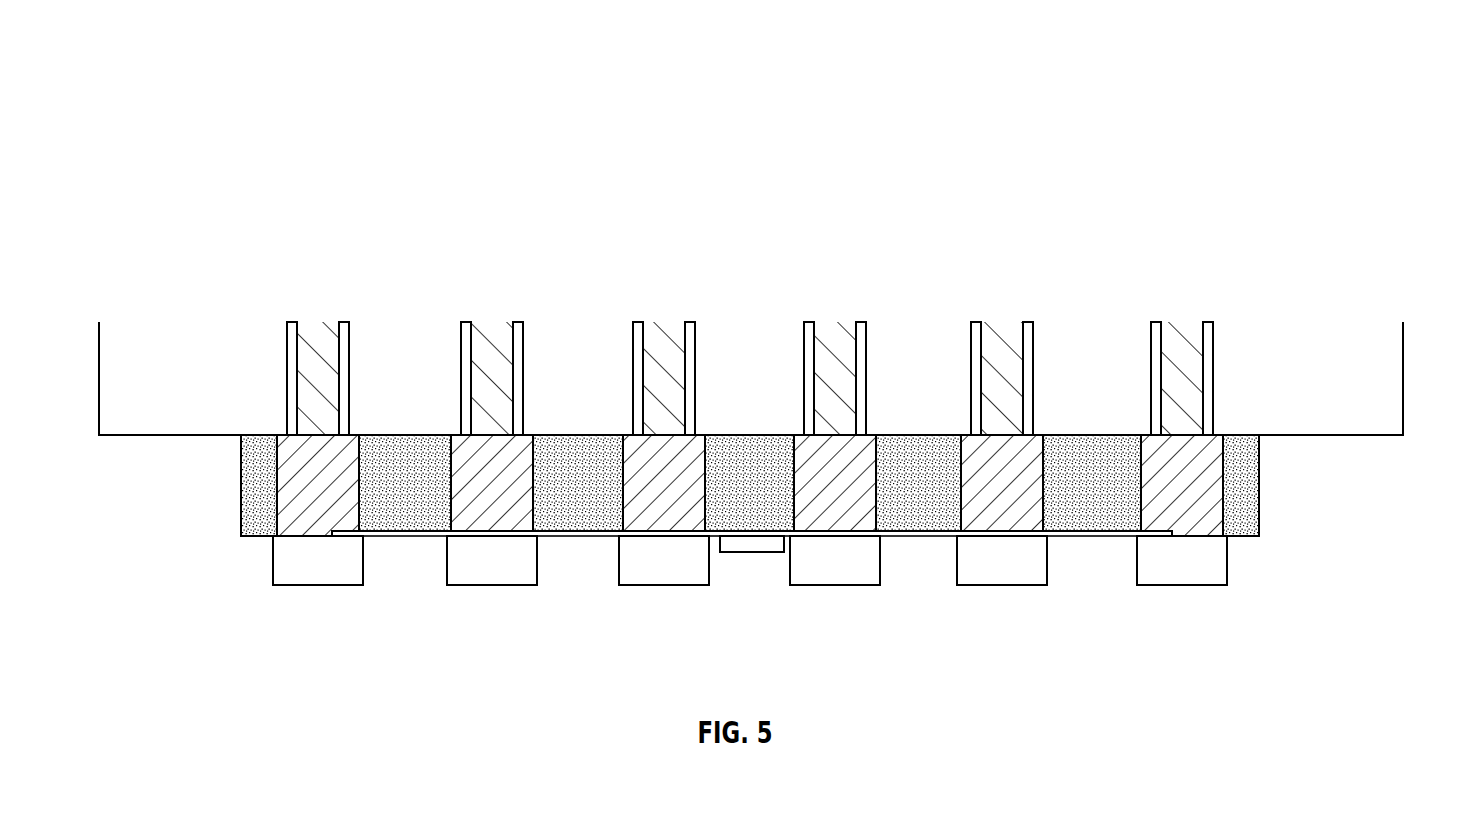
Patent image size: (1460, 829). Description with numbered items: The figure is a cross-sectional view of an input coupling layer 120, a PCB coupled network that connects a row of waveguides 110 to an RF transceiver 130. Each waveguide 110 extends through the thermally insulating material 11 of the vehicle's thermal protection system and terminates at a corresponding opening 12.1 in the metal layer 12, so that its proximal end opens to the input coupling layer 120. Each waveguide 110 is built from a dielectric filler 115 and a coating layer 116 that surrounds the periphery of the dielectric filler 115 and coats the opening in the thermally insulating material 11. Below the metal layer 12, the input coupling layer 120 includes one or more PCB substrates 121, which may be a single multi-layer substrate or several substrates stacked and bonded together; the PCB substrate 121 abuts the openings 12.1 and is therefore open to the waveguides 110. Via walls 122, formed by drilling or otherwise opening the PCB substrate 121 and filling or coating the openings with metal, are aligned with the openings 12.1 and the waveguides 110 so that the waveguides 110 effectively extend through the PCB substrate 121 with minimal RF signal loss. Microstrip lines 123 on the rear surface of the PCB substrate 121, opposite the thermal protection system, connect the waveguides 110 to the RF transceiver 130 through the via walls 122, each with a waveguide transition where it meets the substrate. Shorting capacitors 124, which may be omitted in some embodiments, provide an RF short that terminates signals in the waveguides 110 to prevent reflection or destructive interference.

The thermally insulating material 11 is at (1392, 360).
The metal layer 12 is at (1383, 438).
The opening in the metal layer 12.1 is at (312, 436).
The waveguide 110 is at (782, 346).
The dielectric filler 115 is at (1195, 330).
The coating layer 116 is at (1211, 360).
The input coupling layer 120 is at (709, 525).
The PCB substrate 121 is at (1260, 527).
The via wall 122 is at (359, 473).
The microstrip line 123 is at (413, 537).
The shorting capacitor 124 is at (320, 587).
The RF transceiver 130 is at (757, 554).